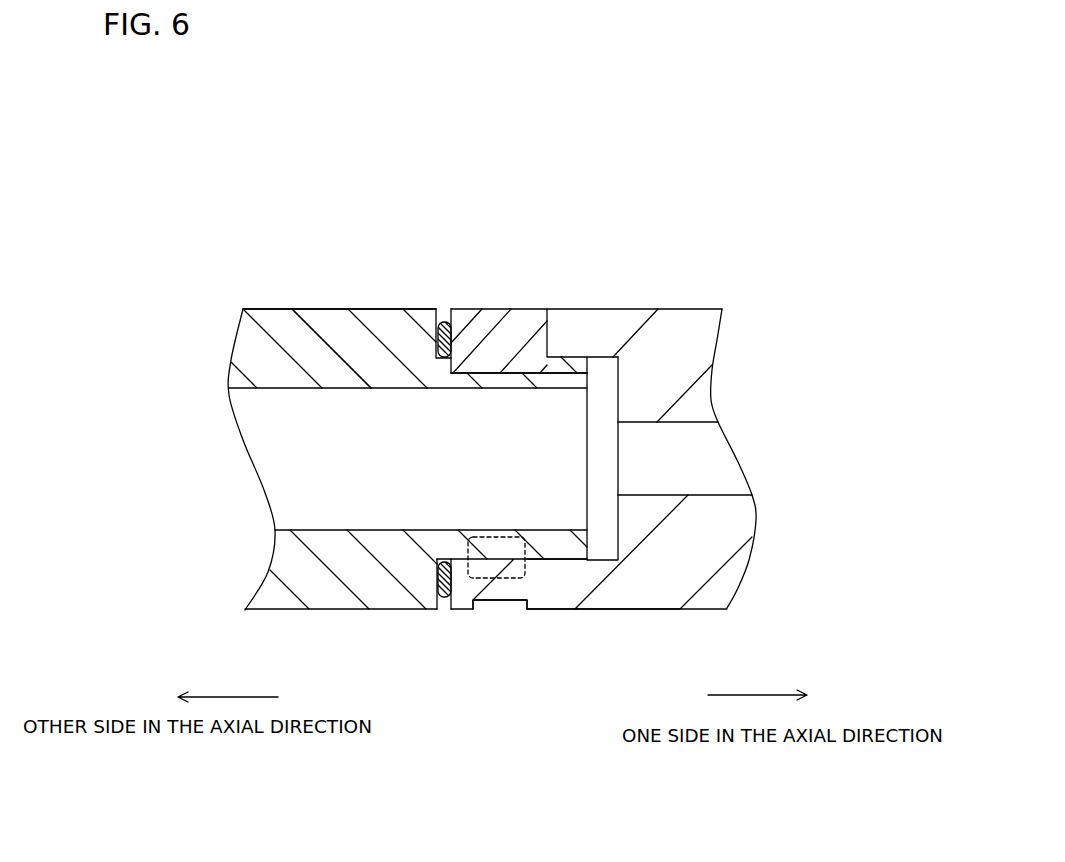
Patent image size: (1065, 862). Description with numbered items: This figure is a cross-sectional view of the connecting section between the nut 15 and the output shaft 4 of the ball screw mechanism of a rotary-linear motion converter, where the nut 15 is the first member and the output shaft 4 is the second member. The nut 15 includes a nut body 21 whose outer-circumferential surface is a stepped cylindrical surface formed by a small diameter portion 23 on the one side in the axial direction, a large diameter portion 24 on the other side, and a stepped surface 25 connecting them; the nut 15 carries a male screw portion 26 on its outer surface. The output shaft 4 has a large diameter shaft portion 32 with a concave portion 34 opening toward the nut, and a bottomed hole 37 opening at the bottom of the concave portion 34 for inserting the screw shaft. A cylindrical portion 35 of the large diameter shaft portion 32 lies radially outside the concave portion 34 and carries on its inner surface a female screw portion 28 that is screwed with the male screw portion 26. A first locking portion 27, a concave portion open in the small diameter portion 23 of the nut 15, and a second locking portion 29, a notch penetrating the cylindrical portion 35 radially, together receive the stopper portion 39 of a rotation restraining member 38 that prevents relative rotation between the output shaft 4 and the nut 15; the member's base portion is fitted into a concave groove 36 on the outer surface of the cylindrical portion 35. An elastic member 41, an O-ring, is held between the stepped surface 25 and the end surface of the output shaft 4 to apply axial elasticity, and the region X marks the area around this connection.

The output shaft 4 is at (699, 294).
The nut 15 is at (362, 229).
The nut body 21 is at (370, 340).
The small diameter portion 23 is at (500, 600).
The large diameter portion 24 is at (319, 308).
The stepped surface 25 is at (438, 603).
The male screw portion 26 is at (557, 563).
The first locking portion 27 is at (449, 330).
The female screw portion 28 is at (530, 563).
The second locking portion 29 is at (538, 316).
The large diameter shaft portion 32 is at (710, 572).
The concave portion 34 is at (613, 357).
The cylindrical portion 35 is at (602, 597).
The concave groove 36 is at (478, 612).
The bottomed hole 37 is at (718, 422).
The rotation restraining member 38 is at (508, 330).
The stopper portion 39 is at (460, 335).
The elastic member 41 is at (447, 322).
The region X is at (499, 531).